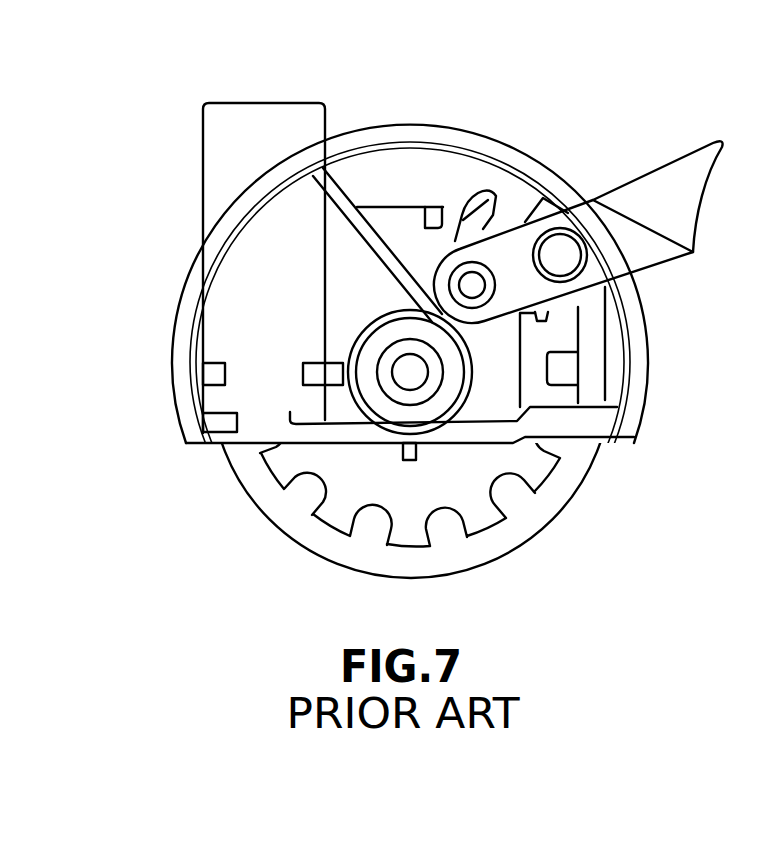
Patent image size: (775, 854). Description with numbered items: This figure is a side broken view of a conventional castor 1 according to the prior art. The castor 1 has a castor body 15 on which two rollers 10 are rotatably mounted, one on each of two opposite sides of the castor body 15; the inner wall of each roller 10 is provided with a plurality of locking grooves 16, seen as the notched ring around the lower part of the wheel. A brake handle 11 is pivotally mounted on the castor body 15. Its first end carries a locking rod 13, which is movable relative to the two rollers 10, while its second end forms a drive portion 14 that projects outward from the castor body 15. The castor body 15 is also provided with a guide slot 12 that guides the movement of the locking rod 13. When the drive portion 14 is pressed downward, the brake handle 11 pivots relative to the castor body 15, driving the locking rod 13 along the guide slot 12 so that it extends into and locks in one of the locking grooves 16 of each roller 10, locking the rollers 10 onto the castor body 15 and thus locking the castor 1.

The castor 1 is at (588, 83).
The rollers 10 is at (577, 473).
The brake handle 11 is at (578, 217).
The guide slot 12 is at (474, 226).
The locking rod 13 is at (470, 280).
The drive portion 14 is at (650, 182).
The castor body 15 is at (508, 150).
The locking grooves 16 is at (532, 475).